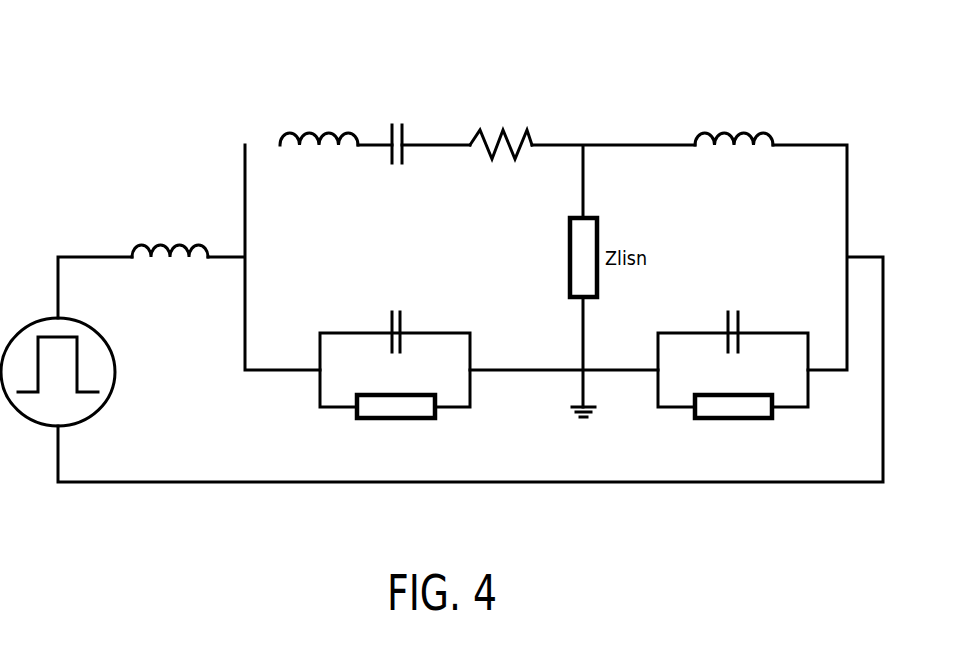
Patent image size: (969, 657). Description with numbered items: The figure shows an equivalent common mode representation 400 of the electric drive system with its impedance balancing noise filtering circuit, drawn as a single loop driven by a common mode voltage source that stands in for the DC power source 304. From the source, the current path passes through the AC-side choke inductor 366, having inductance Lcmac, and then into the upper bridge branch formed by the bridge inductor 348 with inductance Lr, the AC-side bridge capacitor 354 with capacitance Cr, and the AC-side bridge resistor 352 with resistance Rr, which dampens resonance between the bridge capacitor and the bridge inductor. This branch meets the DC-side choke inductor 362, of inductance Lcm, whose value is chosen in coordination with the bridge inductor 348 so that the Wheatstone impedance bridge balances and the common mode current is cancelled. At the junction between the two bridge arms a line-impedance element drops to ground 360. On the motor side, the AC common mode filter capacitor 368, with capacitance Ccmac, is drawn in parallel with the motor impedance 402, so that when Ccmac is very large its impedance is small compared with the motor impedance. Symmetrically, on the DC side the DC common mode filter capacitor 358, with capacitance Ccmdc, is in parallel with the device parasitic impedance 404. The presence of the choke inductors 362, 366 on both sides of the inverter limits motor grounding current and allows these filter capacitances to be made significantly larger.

The common mode equivalent circuit 400 is at (803, 37).
The DC power source 304 is at (110, 403).
The set of AC-side choke inductors 366 is at (176, 241).
The bridge inductor 348 is at (308, 134).
The AC-side bridge capacitor 354 is at (405, 138).
The AC-side bridge resistor 352 is at (530, 140).
The set of DC-side choke inductors 362 is at (742, 132).
The ground 360 is at (583, 420).
The set of AC common mode filter capacitors 368 is at (405, 321).
The motor impedance 402 is at (435, 418).
The set of DC common mode filter capacitors 358 is at (742, 321).
The device parasitic impedance 404 is at (772, 418).